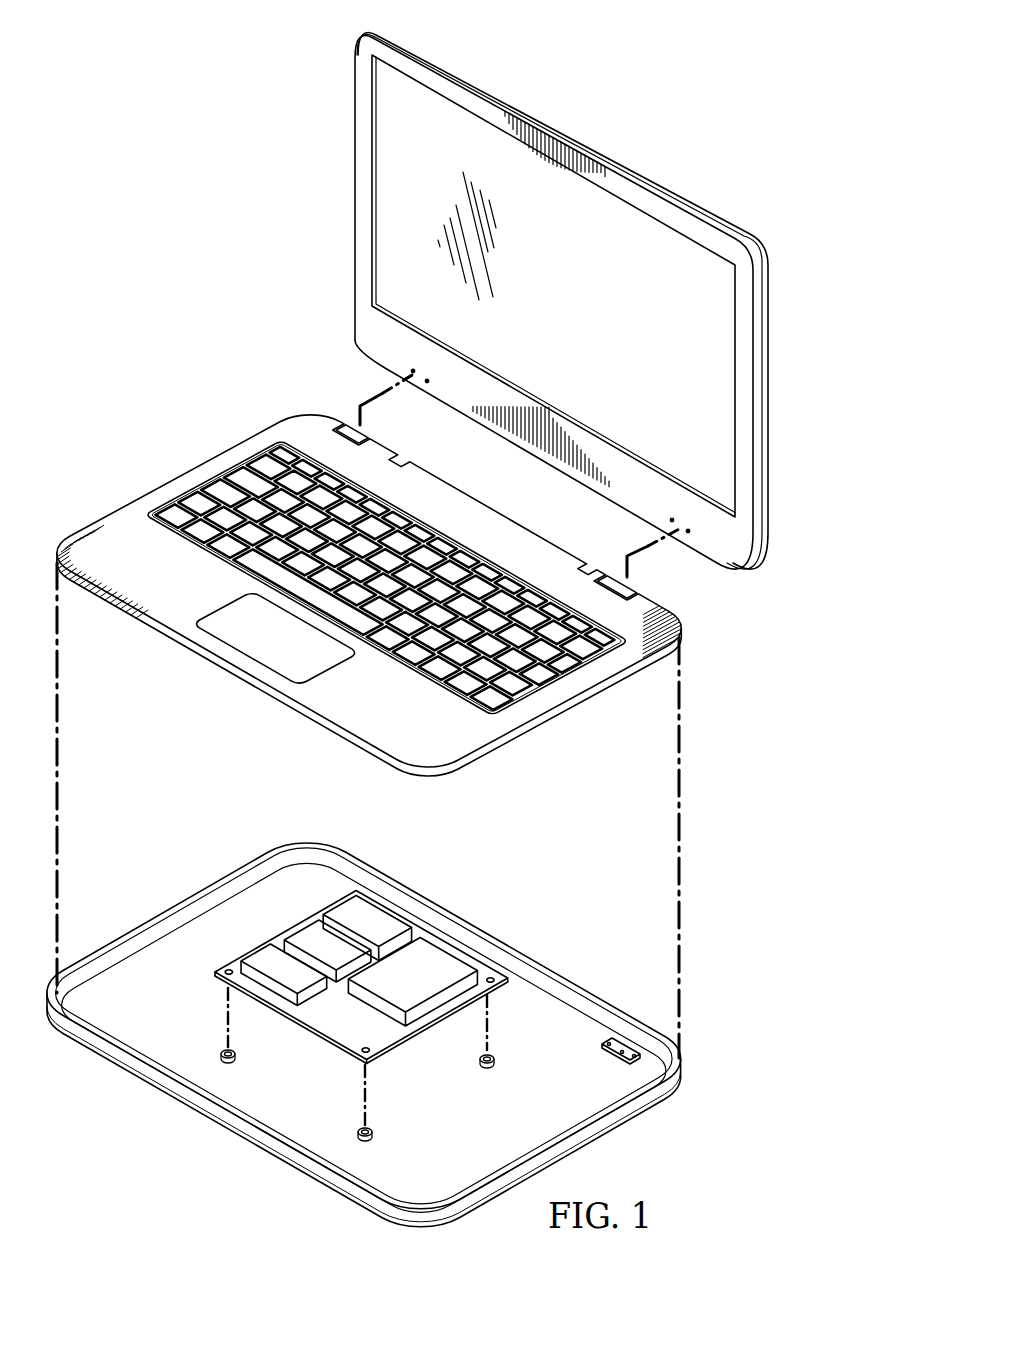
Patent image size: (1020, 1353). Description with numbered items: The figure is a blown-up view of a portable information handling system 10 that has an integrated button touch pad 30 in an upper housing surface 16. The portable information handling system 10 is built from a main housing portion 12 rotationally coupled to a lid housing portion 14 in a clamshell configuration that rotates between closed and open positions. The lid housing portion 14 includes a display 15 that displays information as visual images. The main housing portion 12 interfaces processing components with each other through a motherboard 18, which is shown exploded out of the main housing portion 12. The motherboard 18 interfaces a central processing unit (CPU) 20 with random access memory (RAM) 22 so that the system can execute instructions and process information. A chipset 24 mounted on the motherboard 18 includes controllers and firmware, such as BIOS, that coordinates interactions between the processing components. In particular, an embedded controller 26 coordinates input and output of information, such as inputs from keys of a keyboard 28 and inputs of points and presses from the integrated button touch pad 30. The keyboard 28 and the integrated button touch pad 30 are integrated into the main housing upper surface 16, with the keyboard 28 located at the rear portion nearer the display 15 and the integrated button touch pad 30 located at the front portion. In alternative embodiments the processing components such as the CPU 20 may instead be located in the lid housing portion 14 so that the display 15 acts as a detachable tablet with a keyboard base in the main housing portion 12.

The portable information handling system 10 is at (156, 150).
The main housing portion 12 is at (130, 1084).
The lid housing portion 14 is at (768, 414).
The display 15 is at (588, 135).
The main housing upper surface 16 is at (250, 438).
The motherboard 18 is at (438, 1034).
The central processing unit (CPU) 20 is at (375, 917).
The random access memory (RAM) 22 is at (305, 935).
The chipset 24 is at (445, 955).
The embedded controller 26 is at (265, 960).
The keyboard 28 is at (197, 500).
The integrated button touch pad 30 is at (245, 648).